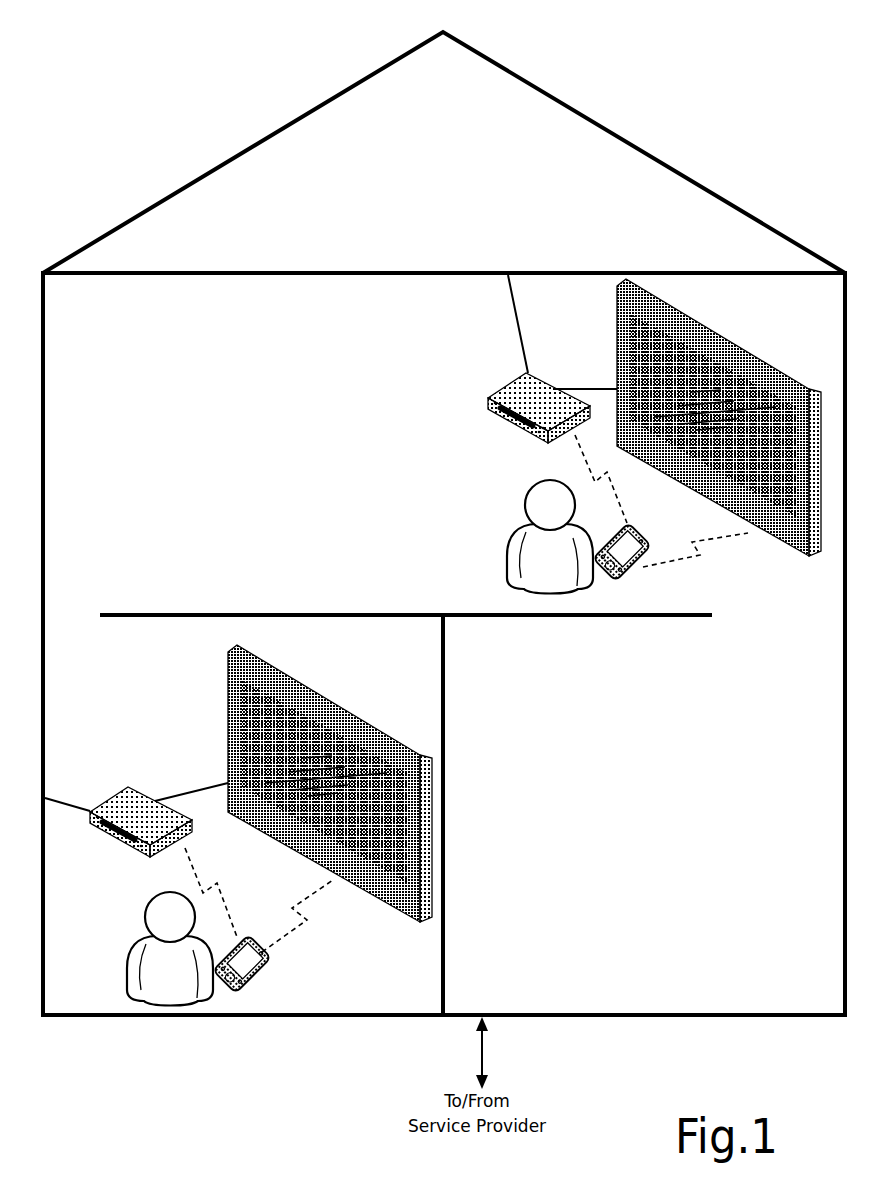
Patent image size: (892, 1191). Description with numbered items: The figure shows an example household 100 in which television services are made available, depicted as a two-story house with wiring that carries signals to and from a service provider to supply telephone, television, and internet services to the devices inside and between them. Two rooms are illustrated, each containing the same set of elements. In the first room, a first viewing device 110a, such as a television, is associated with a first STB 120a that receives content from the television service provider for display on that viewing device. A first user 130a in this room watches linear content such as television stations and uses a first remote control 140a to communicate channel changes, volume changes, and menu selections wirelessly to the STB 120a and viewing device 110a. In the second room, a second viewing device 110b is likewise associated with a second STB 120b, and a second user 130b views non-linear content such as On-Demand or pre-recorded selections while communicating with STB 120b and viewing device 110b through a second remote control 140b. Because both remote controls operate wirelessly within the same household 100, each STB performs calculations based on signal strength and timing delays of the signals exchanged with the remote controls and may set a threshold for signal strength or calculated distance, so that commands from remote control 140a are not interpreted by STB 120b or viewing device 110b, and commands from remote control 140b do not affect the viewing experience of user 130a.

The household 100 is at (80, 77).
The viewing device 110a is at (228, 690).
The viewing device 110b is at (617, 341).
The STB 120a is at (128, 787).
The STB 120b is at (520, 380).
The user 130a is at (143, 938).
The user 130b is at (510, 545).
The remote control 140a is at (258, 972).
The remote control 140b is at (640, 541).